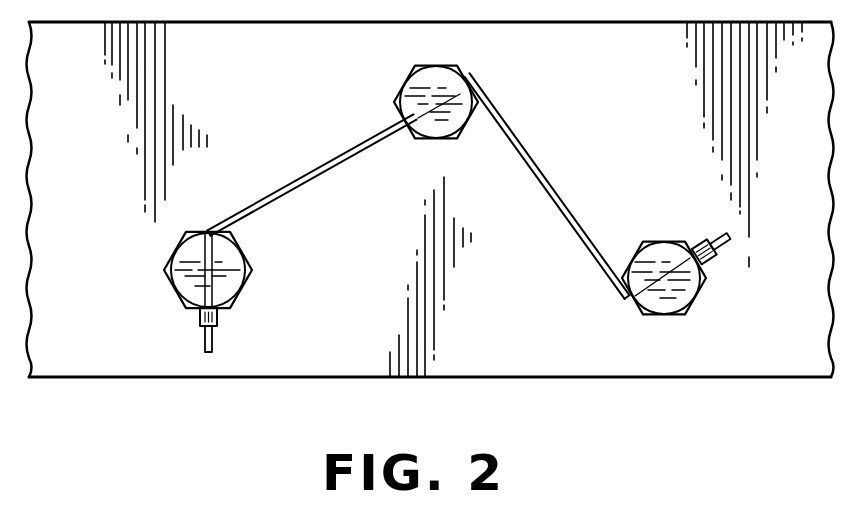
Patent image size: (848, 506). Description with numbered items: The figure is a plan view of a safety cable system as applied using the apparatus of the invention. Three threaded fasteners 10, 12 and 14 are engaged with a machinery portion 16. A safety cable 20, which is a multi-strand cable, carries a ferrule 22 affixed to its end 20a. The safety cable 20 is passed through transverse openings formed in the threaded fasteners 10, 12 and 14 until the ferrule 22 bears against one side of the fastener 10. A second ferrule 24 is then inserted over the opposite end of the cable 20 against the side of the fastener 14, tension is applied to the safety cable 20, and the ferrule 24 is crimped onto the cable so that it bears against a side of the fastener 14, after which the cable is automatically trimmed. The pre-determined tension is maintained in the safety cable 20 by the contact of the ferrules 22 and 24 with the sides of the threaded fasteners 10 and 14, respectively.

The threaded fastener 10 is at (185, 288).
The threaded fastener 12 is at (420, 77).
The threaded fastener 14 is at (690, 303).
The machinery portion 16 is at (638, 357).
The safety cable 20 is at (347, 152).
The end 20a is at (205, 342).
The ferrule 22 is at (218, 316).
The ferrule 24 is at (700, 243).